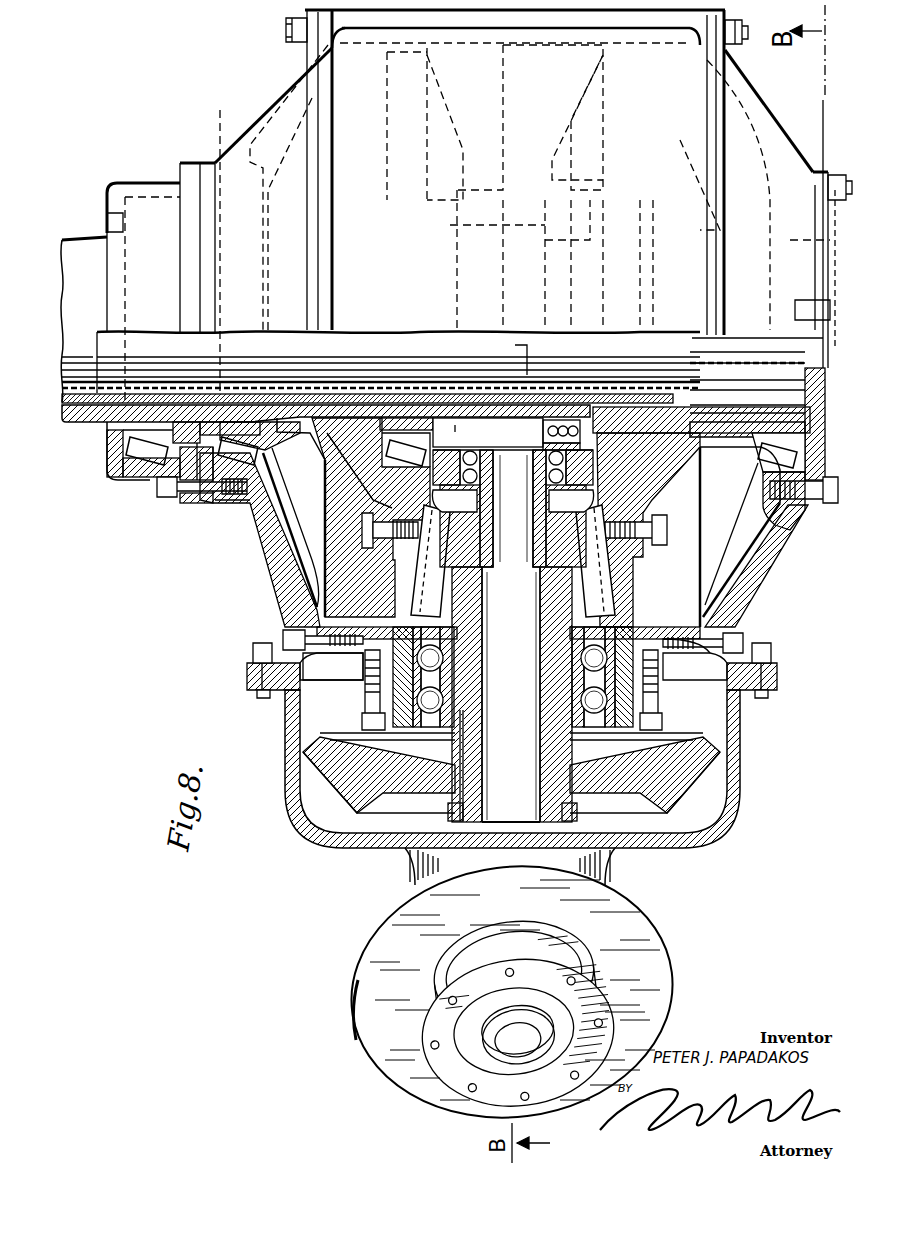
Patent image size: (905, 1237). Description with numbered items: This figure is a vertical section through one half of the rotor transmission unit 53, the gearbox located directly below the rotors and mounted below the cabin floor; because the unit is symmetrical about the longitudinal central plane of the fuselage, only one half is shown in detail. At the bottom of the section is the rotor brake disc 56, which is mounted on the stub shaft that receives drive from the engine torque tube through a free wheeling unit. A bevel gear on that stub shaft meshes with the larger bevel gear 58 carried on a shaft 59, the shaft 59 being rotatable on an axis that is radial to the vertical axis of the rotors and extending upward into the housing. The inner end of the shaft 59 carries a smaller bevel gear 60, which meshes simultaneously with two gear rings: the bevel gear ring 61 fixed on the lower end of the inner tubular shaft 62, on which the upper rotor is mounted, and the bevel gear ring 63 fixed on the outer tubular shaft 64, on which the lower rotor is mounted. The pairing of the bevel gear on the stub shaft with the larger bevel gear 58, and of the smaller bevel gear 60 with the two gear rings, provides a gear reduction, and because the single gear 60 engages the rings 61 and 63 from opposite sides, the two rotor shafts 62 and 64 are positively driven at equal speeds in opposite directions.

The rotor transmission unit 53 is at (251, 116).
The inner tubular shaft 62 is at (498, 397).
The outer tubular shaft 64 is at (280, 417).
The bevel gear ring 63 is at (382, 573).
The smaller bevel gear 60 is at (422, 603).
The bevel gear ring 61 is at (642, 589).
The larger bevel gear 58 is at (693, 797).
The shaft 59 is at (472, 822).
The rotor brake disc 56 is at (372, 942).